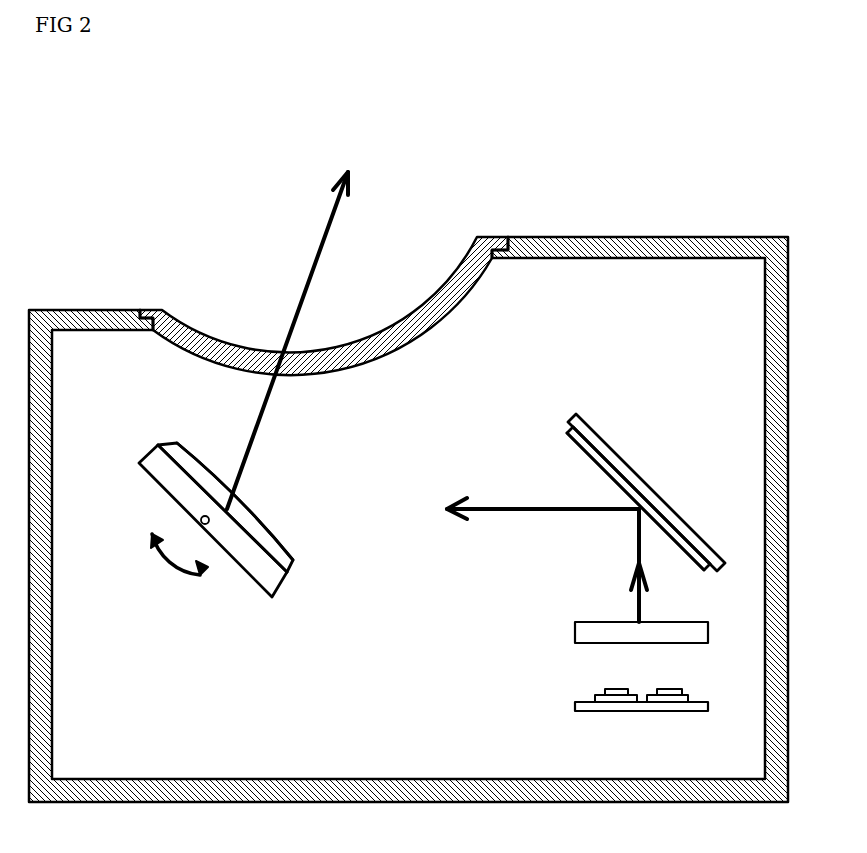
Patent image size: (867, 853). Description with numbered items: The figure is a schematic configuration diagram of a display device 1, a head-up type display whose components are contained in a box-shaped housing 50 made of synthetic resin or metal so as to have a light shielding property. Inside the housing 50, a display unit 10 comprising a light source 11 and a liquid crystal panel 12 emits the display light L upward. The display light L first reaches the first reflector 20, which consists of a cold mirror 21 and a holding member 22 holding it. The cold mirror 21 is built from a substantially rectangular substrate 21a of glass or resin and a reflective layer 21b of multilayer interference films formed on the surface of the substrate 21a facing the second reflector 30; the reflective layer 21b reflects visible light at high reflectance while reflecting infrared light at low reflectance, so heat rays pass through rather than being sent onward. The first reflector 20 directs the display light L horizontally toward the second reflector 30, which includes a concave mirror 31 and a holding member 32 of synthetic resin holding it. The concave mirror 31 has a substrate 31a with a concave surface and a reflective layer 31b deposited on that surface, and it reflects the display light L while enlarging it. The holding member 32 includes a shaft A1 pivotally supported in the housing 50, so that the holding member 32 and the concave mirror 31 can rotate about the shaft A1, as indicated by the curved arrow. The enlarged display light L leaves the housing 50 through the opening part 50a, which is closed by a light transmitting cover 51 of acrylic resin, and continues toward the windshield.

The display device 1 is at (105, 195).
The display unit 10 is at (500, 598).
The light source 11 is at (607, 690).
The liquid crystal panel 12 is at (588, 633).
The first reflector 20 is at (597, 393).
The cold mirror 21 is at (500, 382).
The substrate 21a is at (571, 432).
The reflective layer 21b is at (588, 457).
The holding member 22 is at (607, 438).
The second reflector 30 is at (254, 612).
The concave mirror 31 is at (390, 525).
The substrate 31a is at (283, 567).
The reflective layer 31b is at (278, 548).
The holding member 32 is at (230, 557).
The housing 50 is at (624, 237).
The opening part 50a is at (466, 249).
The light transmitting cover 51 is at (206, 345).
The shaft A1 is at (195, 518).
The display light L is at (348, 497).